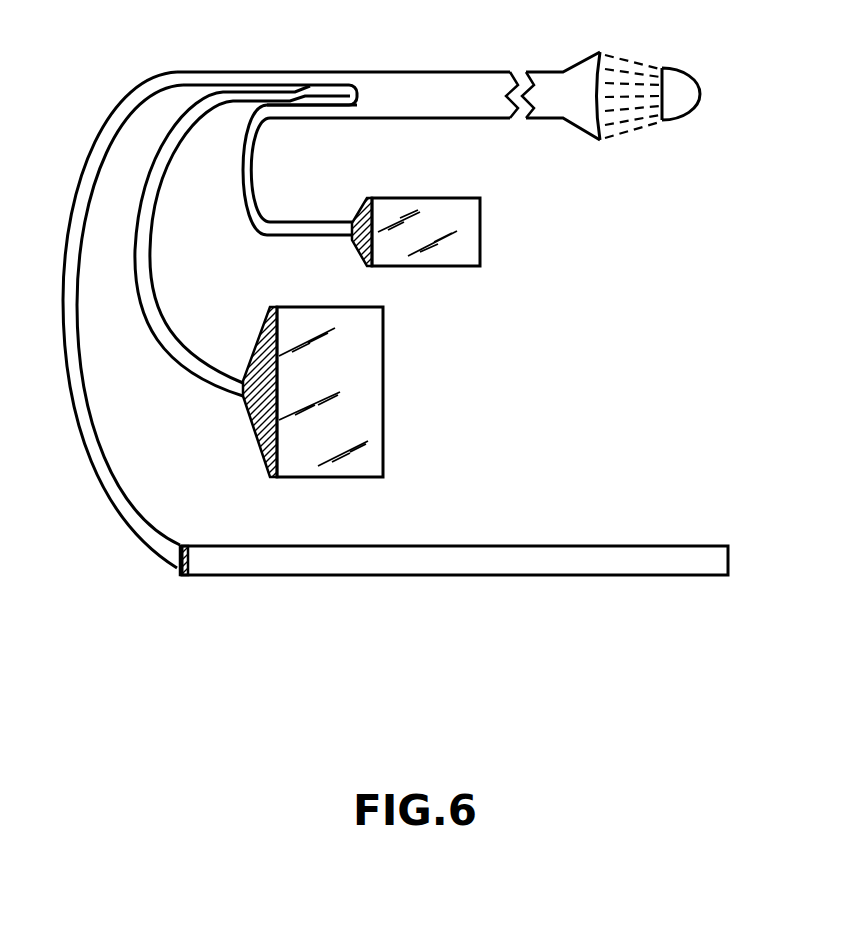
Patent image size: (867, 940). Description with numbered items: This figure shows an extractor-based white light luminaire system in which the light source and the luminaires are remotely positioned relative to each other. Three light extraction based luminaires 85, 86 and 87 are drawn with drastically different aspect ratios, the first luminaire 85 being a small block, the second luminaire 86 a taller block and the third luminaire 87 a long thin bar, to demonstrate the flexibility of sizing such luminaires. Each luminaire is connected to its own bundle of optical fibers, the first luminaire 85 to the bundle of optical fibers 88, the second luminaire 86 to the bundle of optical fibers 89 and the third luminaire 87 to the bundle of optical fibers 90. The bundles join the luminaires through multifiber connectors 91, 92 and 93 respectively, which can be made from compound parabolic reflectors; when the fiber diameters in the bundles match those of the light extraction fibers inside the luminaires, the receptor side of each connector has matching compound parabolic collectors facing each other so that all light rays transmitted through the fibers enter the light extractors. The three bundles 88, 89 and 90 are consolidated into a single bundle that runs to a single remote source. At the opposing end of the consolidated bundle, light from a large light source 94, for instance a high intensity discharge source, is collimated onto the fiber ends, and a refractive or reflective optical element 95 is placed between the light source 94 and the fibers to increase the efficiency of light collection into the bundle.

The light extraction based luminaire 85 is at (462, 243).
The light extraction based luminaire 86 is at (373, 435).
The light extraction based luminaire 87 is at (455, 576).
The bundle of optical fibers 88 is at (258, 238).
The bundle of optical fibers 89 is at (197, 375).
The bundle of optical fibers 90 is at (126, 535).
The multifiber connector 91 is at (363, 203).
The multifiber connector 92 is at (263, 422).
The multifiber connector 93 is at (182, 576).
The light source 94 is at (684, 95).
The refractive or reflective optical element 95 is at (553, 92).